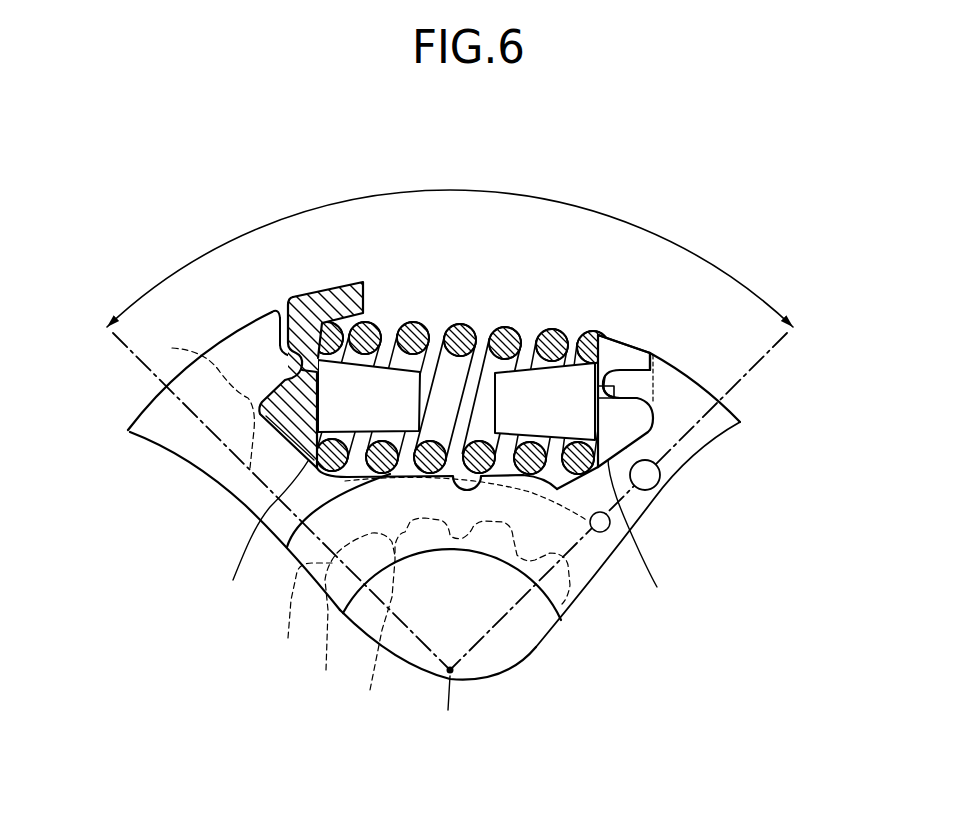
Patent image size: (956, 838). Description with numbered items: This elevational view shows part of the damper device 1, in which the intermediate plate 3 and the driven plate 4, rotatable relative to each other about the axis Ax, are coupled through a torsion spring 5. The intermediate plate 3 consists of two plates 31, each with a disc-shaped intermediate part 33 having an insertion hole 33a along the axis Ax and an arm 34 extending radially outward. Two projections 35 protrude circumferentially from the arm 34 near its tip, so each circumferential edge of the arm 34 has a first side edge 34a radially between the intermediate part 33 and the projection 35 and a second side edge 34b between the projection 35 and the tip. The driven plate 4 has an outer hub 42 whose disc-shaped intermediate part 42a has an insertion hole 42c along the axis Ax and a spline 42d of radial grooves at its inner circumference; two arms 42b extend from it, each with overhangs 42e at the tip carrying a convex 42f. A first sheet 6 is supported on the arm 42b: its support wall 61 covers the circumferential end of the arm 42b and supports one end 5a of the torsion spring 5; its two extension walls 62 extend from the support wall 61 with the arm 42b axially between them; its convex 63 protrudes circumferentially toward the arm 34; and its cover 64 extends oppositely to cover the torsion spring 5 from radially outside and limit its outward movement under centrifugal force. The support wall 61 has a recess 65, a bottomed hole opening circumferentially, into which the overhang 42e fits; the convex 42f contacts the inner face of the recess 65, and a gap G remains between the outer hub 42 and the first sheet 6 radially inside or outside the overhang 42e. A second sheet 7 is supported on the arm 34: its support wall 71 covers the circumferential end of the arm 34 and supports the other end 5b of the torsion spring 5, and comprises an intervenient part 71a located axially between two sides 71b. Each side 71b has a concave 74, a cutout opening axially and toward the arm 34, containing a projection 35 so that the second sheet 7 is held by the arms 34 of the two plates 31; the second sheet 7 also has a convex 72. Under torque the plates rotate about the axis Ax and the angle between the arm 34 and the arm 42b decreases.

The damper device 1 is at (216, 180).
The axis Ax is at (450, 543).
The intermediate plate 3 is at (720, 443).
The plate 31 is at (742, 420).
The intermediate part 33 is at (580, 583).
The insertion hole 33a is at (548, 612).
The arm 34 is at (672, 471).
The first side edge 34a is at (612, 523).
The second side edge 34b is at (655, 355).
The driven plate 4 is at (209, 480).
The outer hub 42 is at (126, 432).
The intermediate part 42a is at (299, 614).
The arm 42b is at (183, 452).
The insertion hole 42c is at (461, 617).
The spline 42d is at (351, 614).
The overhang 42e is at (264, 326).
The convex 42f is at (278, 370).
The torsion spring 5 is at (489, 328).
The one end of the torsion spring 5a is at (268, 528).
The other end of the torsion spring 5b is at (638, 527).
The projection 35 is at (579, 343).
The first sheet 6 is at (325, 284).
The support wall 61 is at (300, 336).
The extension wall 62 is at (198, 402).
The convex 63 is at (403, 386).
The cover 64 is at (350, 290).
The recess 65 is at (288, 364).
The second sheet 7 is at (627, 337).
The support wall 71 is at (604, 340).
The intervenient part 71a is at (652, 345).
The side 71b is at (608, 345).
The convex 72 is at (523, 386).
The concave 74 is at (594, 400).
The gap G is at (280, 302).